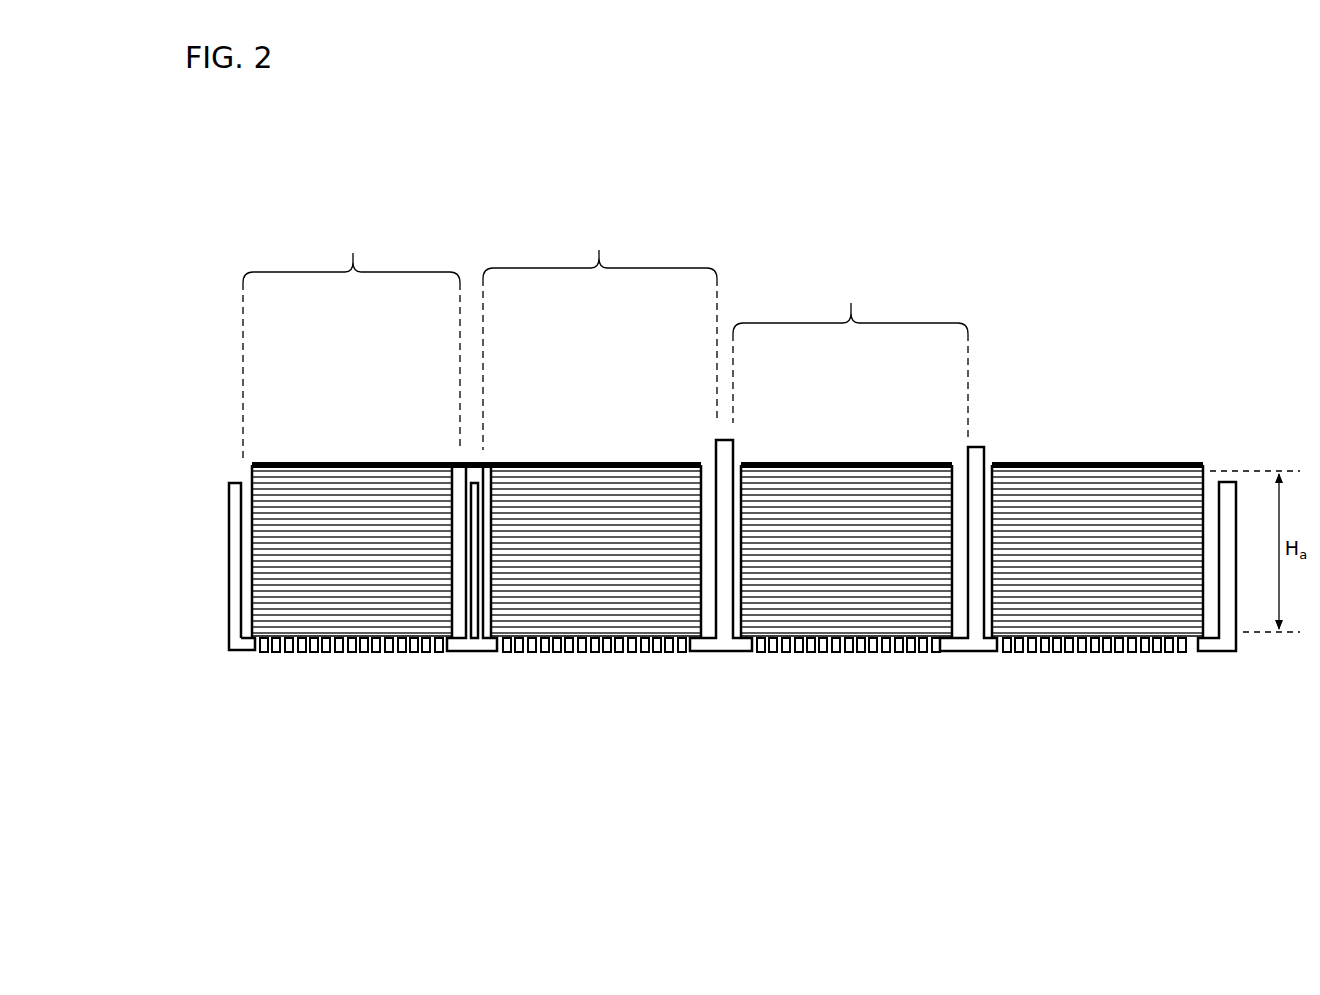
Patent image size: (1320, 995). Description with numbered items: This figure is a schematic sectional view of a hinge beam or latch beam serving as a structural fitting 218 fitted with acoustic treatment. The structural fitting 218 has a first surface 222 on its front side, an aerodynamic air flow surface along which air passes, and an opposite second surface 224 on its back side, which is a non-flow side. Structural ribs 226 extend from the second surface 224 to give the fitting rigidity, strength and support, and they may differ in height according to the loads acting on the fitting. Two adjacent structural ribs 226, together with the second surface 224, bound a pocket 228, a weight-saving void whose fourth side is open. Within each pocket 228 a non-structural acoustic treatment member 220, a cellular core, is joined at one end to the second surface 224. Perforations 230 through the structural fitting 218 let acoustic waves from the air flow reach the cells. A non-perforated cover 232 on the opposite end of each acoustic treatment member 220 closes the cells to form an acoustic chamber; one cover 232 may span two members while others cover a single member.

The structural fitting 218 is at (737, 778).
The non-structural acoustic treatment member 220 is at (355, 512).
The first surface 222 is at (243, 652).
The second surface 224 is at (709, 651).
The structural rib 226 is at (237, 513).
The pocket 228 is at (605, 338).
The perforation 230 is at (475, 462).
The non-perforated cover 232 is at (310, 463).